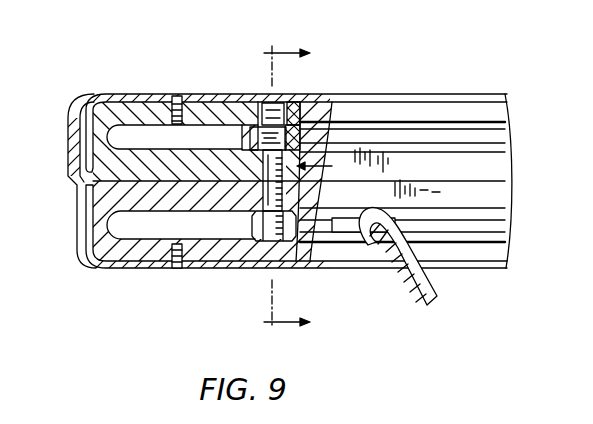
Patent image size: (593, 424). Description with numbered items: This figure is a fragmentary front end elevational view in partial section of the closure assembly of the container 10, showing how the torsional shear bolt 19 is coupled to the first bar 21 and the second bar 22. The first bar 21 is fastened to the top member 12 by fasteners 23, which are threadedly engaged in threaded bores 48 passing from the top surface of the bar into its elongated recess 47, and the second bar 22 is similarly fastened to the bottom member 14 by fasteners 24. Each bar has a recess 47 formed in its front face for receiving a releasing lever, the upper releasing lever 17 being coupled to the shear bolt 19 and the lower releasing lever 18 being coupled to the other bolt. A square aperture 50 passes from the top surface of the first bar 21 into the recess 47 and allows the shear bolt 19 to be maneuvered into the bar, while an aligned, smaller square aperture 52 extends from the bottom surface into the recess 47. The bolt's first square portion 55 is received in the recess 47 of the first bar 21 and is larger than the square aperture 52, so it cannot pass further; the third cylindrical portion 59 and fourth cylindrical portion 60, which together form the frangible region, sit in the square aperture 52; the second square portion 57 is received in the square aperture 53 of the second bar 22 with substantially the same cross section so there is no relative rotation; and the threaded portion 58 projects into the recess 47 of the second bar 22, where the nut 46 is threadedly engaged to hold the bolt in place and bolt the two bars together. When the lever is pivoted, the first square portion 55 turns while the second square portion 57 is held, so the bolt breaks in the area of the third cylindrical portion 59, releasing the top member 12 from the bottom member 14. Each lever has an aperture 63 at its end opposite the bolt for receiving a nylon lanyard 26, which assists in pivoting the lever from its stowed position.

The container 10 is at (274, 188).
The top member 12 is at (470, 93).
The bottom member 14 is at (481, 268).
The upper releasing lever 17 is at (490, 128).
The lower releasing lever 18 is at (494, 222).
The torsional shear bolt 19 is at (326, 166).
The first bar 21 is at (120, 108).
The second bar 22 is at (113, 262).
The fasteners 23 is at (173, 96).
The fasteners 24 is at (177, 268).
The nylon lanyard 26 is at (420, 306).
The nut 46 is at (258, 232).
The elongated recess 47 is at (106, 114).
The threaded bores 48 is at (180, 115).
The square aperture 50 is at (278, 105).
The square aperture 52 is at (247, 160).
The square aperture 53 is at (237, 197).
The first portion 55 is at (305, 135).
The second portion 57 is at (300, 187).
The threaded portion 58 is at (301, 243).
The third portion 59 is at (335, 160).
The fourth portion 60 is at (397, 173).
The aperture 63 is at (403, 216).